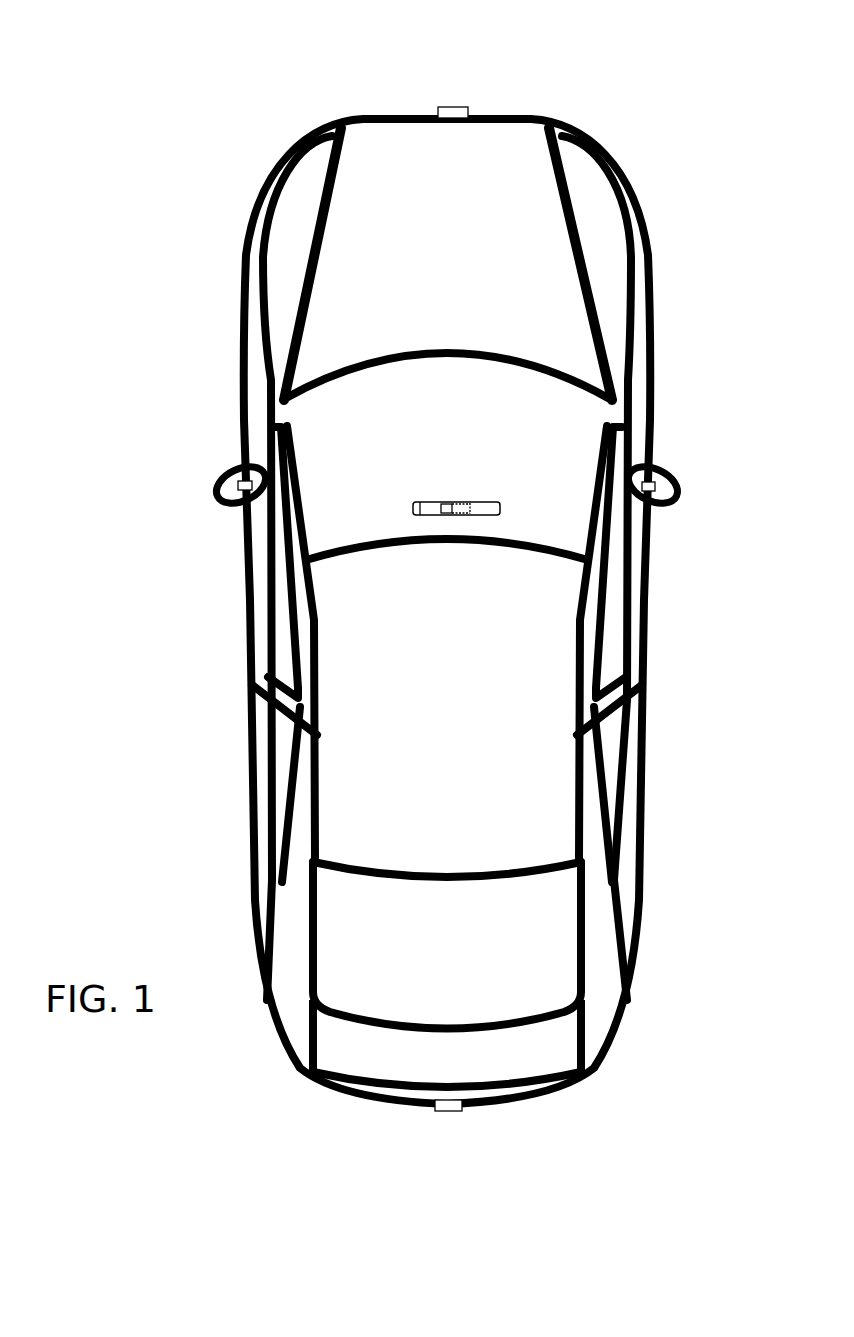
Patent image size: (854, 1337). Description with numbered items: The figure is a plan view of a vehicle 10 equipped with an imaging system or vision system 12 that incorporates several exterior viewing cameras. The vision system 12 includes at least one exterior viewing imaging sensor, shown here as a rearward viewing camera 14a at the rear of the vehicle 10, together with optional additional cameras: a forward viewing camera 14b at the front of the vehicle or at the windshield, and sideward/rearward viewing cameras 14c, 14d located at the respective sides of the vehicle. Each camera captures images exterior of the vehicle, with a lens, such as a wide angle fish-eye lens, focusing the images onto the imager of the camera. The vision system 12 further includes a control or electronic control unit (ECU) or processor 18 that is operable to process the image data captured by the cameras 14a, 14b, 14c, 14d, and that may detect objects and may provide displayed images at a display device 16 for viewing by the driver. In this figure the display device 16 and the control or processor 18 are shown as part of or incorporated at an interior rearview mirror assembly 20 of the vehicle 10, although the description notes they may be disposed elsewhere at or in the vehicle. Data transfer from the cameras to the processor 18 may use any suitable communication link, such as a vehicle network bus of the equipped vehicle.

The vehicle 10 is at (190, 204).
The vision system 12 is at (390, 1137).
The rearward viewing camera 14a is at (450, 1108).
The forward viewing camera 14b is at (453, 107).
The sideward/rearward viewing camera 14c is at (238, 483).
The sideward/rearward viewing camera 14d is at (655, 485).
The display device 16 is at (432, 503).
The electronic control unit 18 is at (452, 503).
The interior rearview mirror assembly 20 is at (498, 501).